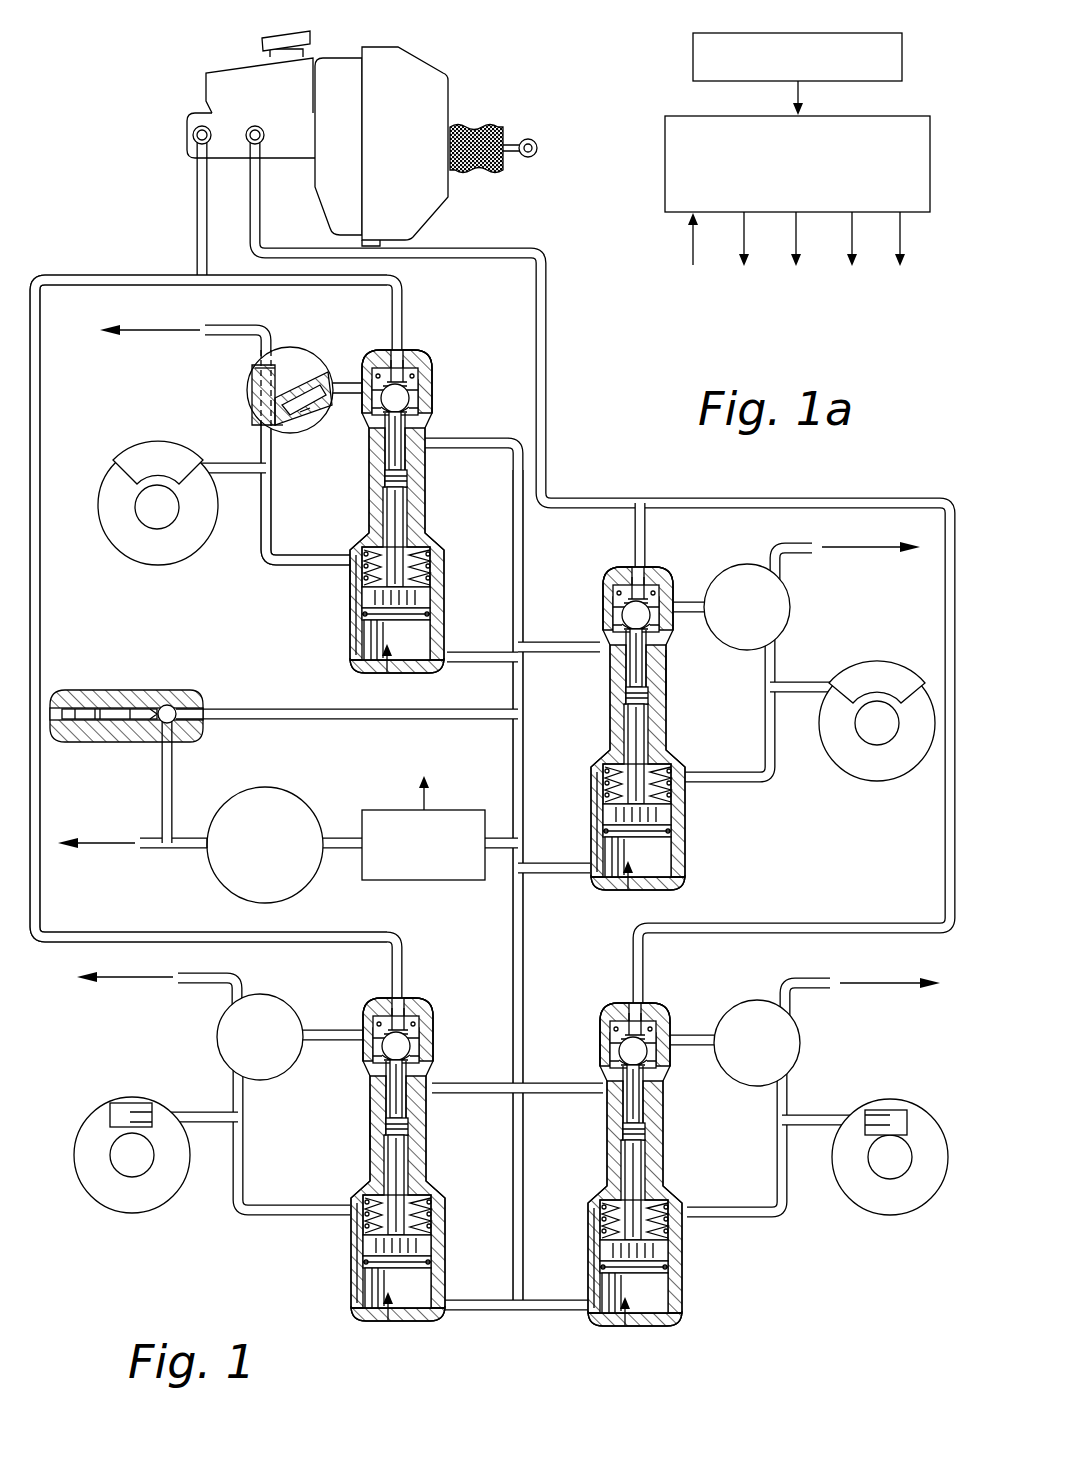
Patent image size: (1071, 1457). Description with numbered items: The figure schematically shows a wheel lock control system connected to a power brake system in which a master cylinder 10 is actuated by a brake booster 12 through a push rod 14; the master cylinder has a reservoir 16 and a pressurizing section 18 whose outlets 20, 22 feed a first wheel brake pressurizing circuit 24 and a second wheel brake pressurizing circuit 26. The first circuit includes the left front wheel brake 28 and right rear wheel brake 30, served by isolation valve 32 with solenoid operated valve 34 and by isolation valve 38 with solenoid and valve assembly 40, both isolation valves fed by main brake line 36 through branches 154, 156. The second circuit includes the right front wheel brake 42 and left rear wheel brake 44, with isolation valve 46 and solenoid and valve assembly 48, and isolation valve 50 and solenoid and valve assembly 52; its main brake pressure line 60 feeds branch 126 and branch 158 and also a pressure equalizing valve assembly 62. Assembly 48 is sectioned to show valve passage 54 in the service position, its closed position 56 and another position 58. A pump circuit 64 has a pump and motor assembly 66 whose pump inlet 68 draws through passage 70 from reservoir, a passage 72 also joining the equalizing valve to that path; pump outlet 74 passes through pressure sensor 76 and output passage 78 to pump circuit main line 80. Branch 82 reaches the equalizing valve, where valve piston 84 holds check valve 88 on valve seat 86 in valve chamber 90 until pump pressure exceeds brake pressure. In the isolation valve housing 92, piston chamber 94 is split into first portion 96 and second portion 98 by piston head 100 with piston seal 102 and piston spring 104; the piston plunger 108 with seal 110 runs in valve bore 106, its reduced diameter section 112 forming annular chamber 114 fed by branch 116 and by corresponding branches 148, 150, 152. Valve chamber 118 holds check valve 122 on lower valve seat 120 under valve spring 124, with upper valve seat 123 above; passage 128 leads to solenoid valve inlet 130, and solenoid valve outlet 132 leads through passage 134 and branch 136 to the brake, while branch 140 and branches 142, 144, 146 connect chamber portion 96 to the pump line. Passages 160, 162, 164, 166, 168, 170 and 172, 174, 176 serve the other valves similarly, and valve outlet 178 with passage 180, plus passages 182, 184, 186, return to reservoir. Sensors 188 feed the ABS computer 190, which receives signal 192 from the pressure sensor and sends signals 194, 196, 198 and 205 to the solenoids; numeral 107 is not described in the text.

In FIG. 1, the master cylinder 10 is at (216, 97).
In FIG. 1, the brake booster 12 is at (340, 97).
In FIG. 1, the push rod 14 is at (528, 137).
In FIG. 1, the reservoir 16 is at (248, 80).
In FIG. 1, the pressurizing section 18 is at (231, 160).
In FIG. 1, the outlet 20 is at (265, 142).
In FIG. 1, the outlet 22 is at (198, 130).
In FIG. 1, the first wheel brake pressurizing circuit 24 is at (463, 256).
In FIG. 1, the second wheel brake pressurizing circuit 26 is at (68, 276).
In FIG. 1, the left front wheel brake 28 is at (882, 676).
In FIG. 1, the right rear wheel brake 30 is at (882, 1108).
In FIG. 1, the isolation valve 32 is at (678, 690).
In FIG. 1, the solenoid operated valve 34 is at (727, 570).
In FIG. 1, the main brake line 36 is at (546, 345).
In FIG. 1, the isolation valve 38 is at (600, 1020).
In FIG. 1, the solenoid and valve assembly 40 is at (800, 1042).
In FIG. 1, the right front wheel brake 42 is at (145, 452).
In FIG. 1, the left rear wheel brake 44 is at (120, 1108).
In FIG. 1, the isolation valve 46 is at (357, 596).
In FIG. 1, the solenoid and valve assembly 48 is at (250, 405).
In FIG. 1, the isolation valve 50 is at (372, 1145).
In FIG. 1, the solenoid and valve assembly 52 is at (282, 1000).
In FIG. 1, the valve passage 54 is at (320, 425).
In FIG. 1, the closed position 56 is at (283, 430).
In FIG. 1, the another position 58 is at (255, 370).
In FIG. 1, the main brake pressure line 60 is at (40, 558).
In FIG. 1, the pressure equalizing valve assembly 62 is at (70, 690).
In FIG. 1, the pump circuit 64 is at (515, 888).
In FIG. 1, the pump and motor assembly 66 is at (247, 790).
In FIG. 1, the pump inlet 68 is at (210, 835).
In FIG. 1, the passage 70 is at (186, 848).
In FIG. 1, the passage 72 is at (163, 765).
In FIG. 1, the pump outlet 74 is at (332, 852).
In FIG. 1, the pressure sensor 76 is at (380, 814).
In FIG. 1, the output passage 78 is at (352, 850).
In FIG. 1, the pump circuit main line 80 is at (522, 806).
In FIG. 1, the branch 82 is at (258, 710).
In FIG. 1, the valve piston 84 is at (112, 728).
In FIG. 1, the valve seat 86 is at (178, 732).
In FIG. 1, the check valve 88 is at (167, 703).
In FIG. 1, the valve chamber 90 is at (140, 700).
In FIG. 1, the isolation valve housing 92 is at (418, 500).
In FIG. 1, the piston chamber 94 is at (385, 670).
In FIG. 1, the first portion 96 is at (437, 662).
In FIG. 1, the second portion 98 is at (432, 593).
In FIG. 1, the piston head 100 is at (400, 640).
In FIG. 1, the piston seal 102 is at (352, 615).
In FIG. 1, the piston spring 104 is at (432, 575).
In FIG. 1, the valve bore 106 is at (358, 552).
In FIG. 1, the spring chamber 107 is at (430, 555).
In FIG. 1, the piston plunger 108 is at (400, 530).
In FIG. 1, the seal 110 is at (386, 478).
In FIG. 1, the reduced diameter section 112 is at (398, 440).
In FIG. 1, the annular chamber 114 is at (386, 460).
In FIG. 1, the branch 116 is at (438, 445).
In FIG. 1, the valve chamber 118 is at (416, 388).
In FIG. 1, the lower valve seat 120 is at (406, 410).
In FIG. 1, the check valve 122 is at (407, 395).
In FIG. 1, the upper valve seat 123 is at (400, 366).
In FIG. 1, the valve spring 124 is at (422, 360).
In FIG. 1, the branch 126 is at (392, 300).
In FIG. 1, the passage 128 is at (355, 383).
In FIG. 1, the solenoid operated valve inlet 130 is at (353, 392).
In FIG. 1, the solenoid valve outlet 132 is at (262, 438).
In FIG. 1, the passage 134 is at (262, 540).
In FIG. 1, the branch 136 is at (236, 472).
In FIG. 1, the branch 140 is at (485, 662).
In FIG. 1, the branch 142 is at (545, 875).
In FIG. 1, the branch 144 is at (548, 1311).
In FIG. 1, the branch 146 is at (485, 1312).
In FIG. 1, the branch 148 is at (568, 653).
In FIG. 1, the branch 150 is at (563, 1095).
In FIG. 1, the branch 152 is at (468, 1093).
In FIG. 1, the branch 154 is at (635, 525).
In FIG. 1, the branch 156 is at (636, 950).
In FIG. 1, the branch 158 is at (403, 945).
In FIG. 1, the passage 160 is at (776, 760).
In FIG. 1, the passage 162 is at (782, 684).
In FIG. 1, the passage 164 is at (777, 1216).
In FIG. 1, the passage 166 is at (786, 1170).
In FIG. 1, the passage 168 is at (245, 1092).
In FIG. 1, the passage 170 is at (238, 1148).
In FIG. 1, the passage 172 is at (688, 605).
In FIG. 1, the passage 174 is at (700, 1038).
In FIG. 1, the passage 176 is at (332, 1040).
In FIG. 1, the valve outlet 178 is at (262, 350).
In FIG. 1, the passage 180 is at (250, 327).
In FIG. 1, the passage 182 is at (797, 550).
In FIG. 1, the passage 184 is at (805, 982).
In FIG. 1, the passage 186 is at (210, 980).
In FIG. 1A, the sensors 188 is at (700, 55).
In FIG. 1A, the ABS computer 190 is at (700, 130).
In FIG. 1, the signal 192 is at (430, 797).
In FIG. 1A, the signal 192 is at (685, 238).
In FIG. 1A, the signal 194 is at (740, 222).
In FIG. 1A, the signal 196 is at (793, 222).
In FIG. 1A, the signal 198 is at (848, 222).
In FIG. 1A, the signal to solenoid #4 205 is at (898, 222).